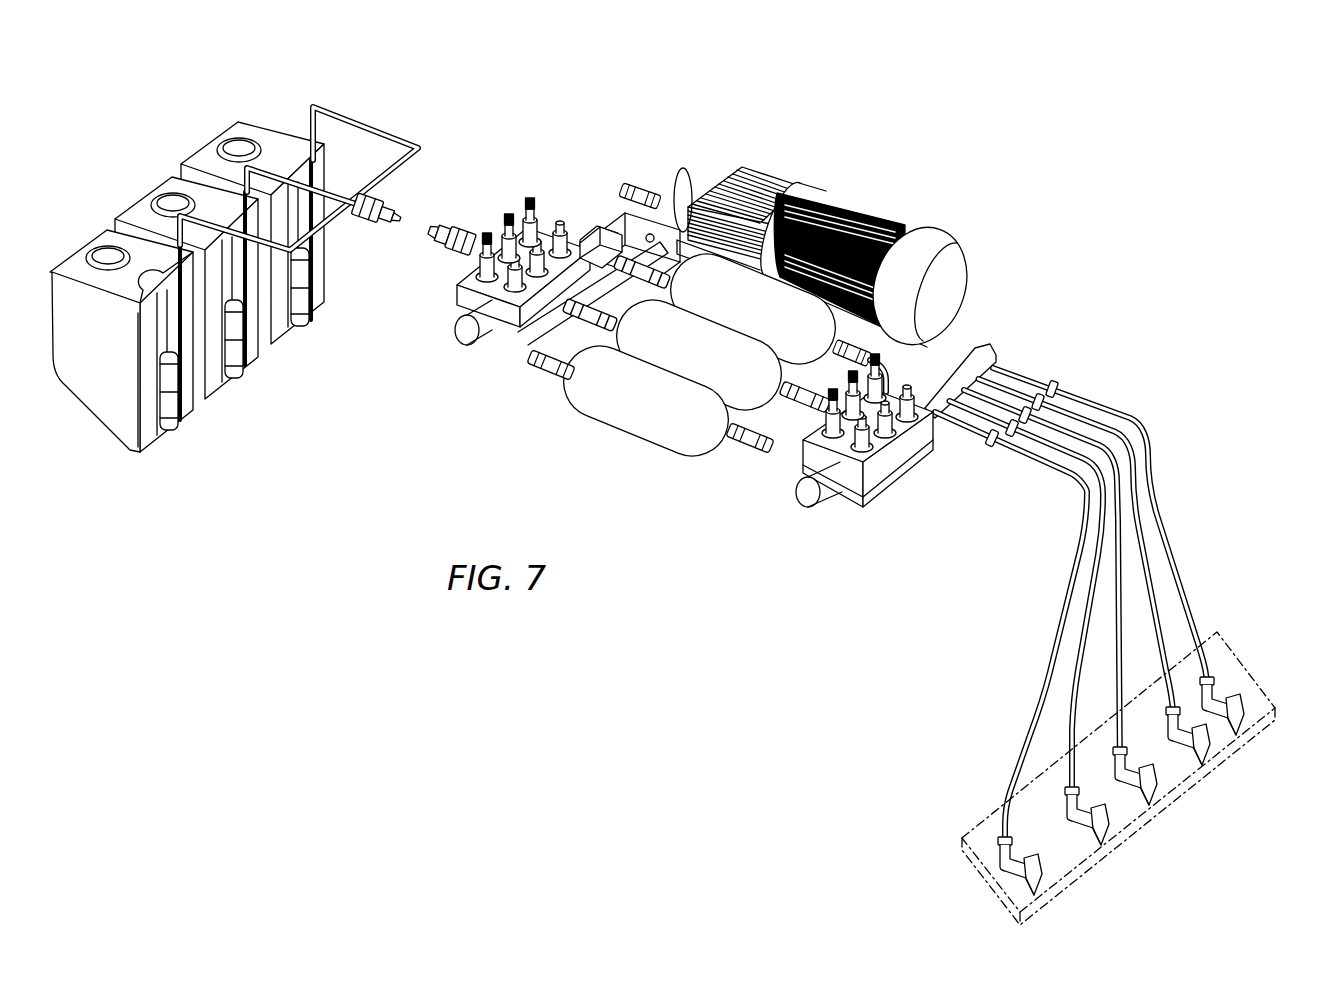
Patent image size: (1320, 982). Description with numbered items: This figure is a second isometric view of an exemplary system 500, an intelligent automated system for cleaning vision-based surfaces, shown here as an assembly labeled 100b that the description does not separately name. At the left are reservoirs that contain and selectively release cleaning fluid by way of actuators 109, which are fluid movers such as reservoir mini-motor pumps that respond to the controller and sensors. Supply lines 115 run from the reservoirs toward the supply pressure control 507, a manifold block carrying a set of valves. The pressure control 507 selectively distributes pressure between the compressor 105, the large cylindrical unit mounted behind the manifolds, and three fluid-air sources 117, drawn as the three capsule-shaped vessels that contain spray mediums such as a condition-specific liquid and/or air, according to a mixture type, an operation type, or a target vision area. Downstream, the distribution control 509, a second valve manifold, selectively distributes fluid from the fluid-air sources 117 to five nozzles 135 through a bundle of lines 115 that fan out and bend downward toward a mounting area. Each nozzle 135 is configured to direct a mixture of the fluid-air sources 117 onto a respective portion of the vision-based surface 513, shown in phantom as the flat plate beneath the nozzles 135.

The system 500 is at (684, 466).
The fluid dispensing assembly 100b is at (684, 466).
The compressor 105 is at (977, 308).
The actuator 109 is at (190, 403).
The supply line 115 is at (367, 123).
The fluid-air source 117 is at (592, 405).
The nozzle 135 is at (1235, 703).
The pressure control 507 is at (455, 285).
The distribution control 509 is at (872, 515).
The vision-based surface 513 is at (1125, 836).